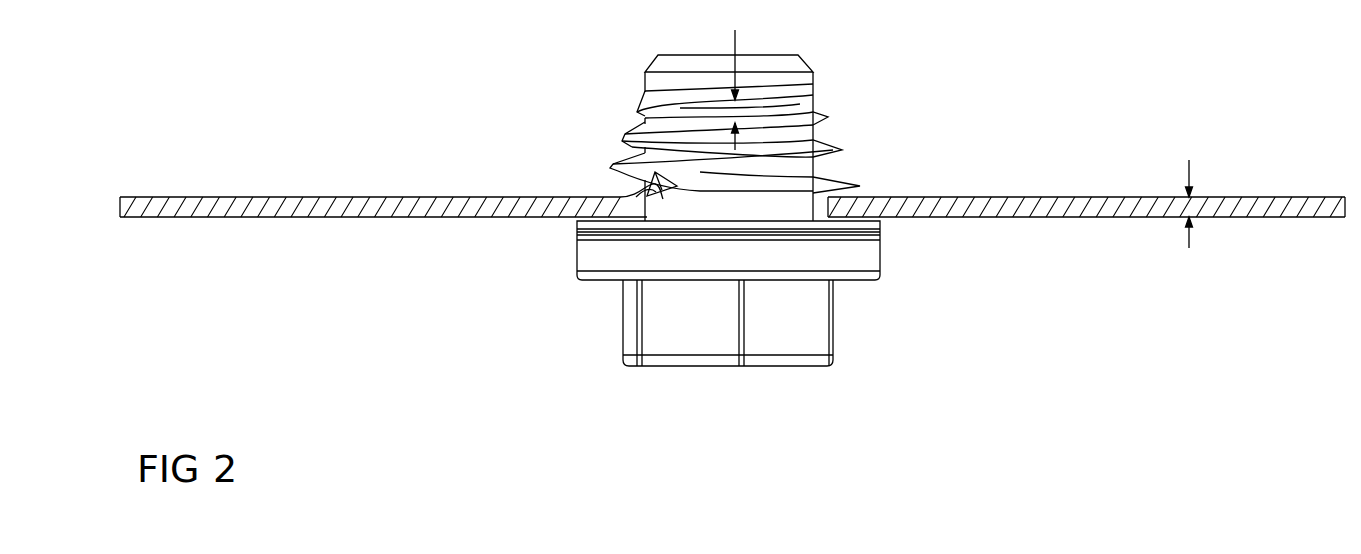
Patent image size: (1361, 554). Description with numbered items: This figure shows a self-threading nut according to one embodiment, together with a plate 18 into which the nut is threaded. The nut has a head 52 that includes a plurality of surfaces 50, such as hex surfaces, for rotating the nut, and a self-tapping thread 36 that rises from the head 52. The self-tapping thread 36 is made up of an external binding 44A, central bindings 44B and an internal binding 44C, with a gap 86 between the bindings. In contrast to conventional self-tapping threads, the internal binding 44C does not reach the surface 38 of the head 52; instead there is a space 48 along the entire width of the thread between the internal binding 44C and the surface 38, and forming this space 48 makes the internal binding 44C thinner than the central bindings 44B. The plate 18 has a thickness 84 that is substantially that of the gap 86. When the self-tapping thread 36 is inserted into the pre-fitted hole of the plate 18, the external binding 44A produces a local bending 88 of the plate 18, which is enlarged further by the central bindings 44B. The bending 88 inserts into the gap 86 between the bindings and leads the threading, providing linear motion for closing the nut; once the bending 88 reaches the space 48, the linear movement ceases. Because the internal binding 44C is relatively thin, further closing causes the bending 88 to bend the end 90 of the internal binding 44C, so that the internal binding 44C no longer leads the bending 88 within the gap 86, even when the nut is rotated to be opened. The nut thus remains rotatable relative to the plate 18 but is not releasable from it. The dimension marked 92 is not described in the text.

The plate 18 is at (1081, 200).
The self-tapping thread 36 is at (585, 112).
The surface 38 is at (890, 210).
The external binding 44A is at (796, 93).
The central bindings 44B is at (828, 118).
The internal binding 44C is at (845, 176).
The space 48 is at (724, 207).
The surfaces 50 is at (793, 322).
The head 52 is at (897, 253).
The thickness 84 is at (1206, 203).
The gap 86 is at (788, 108).
The local bending 88 is at (641, 194).
The end 90 is at (648, 185).
The thread pitch 92 is at (735, 42).